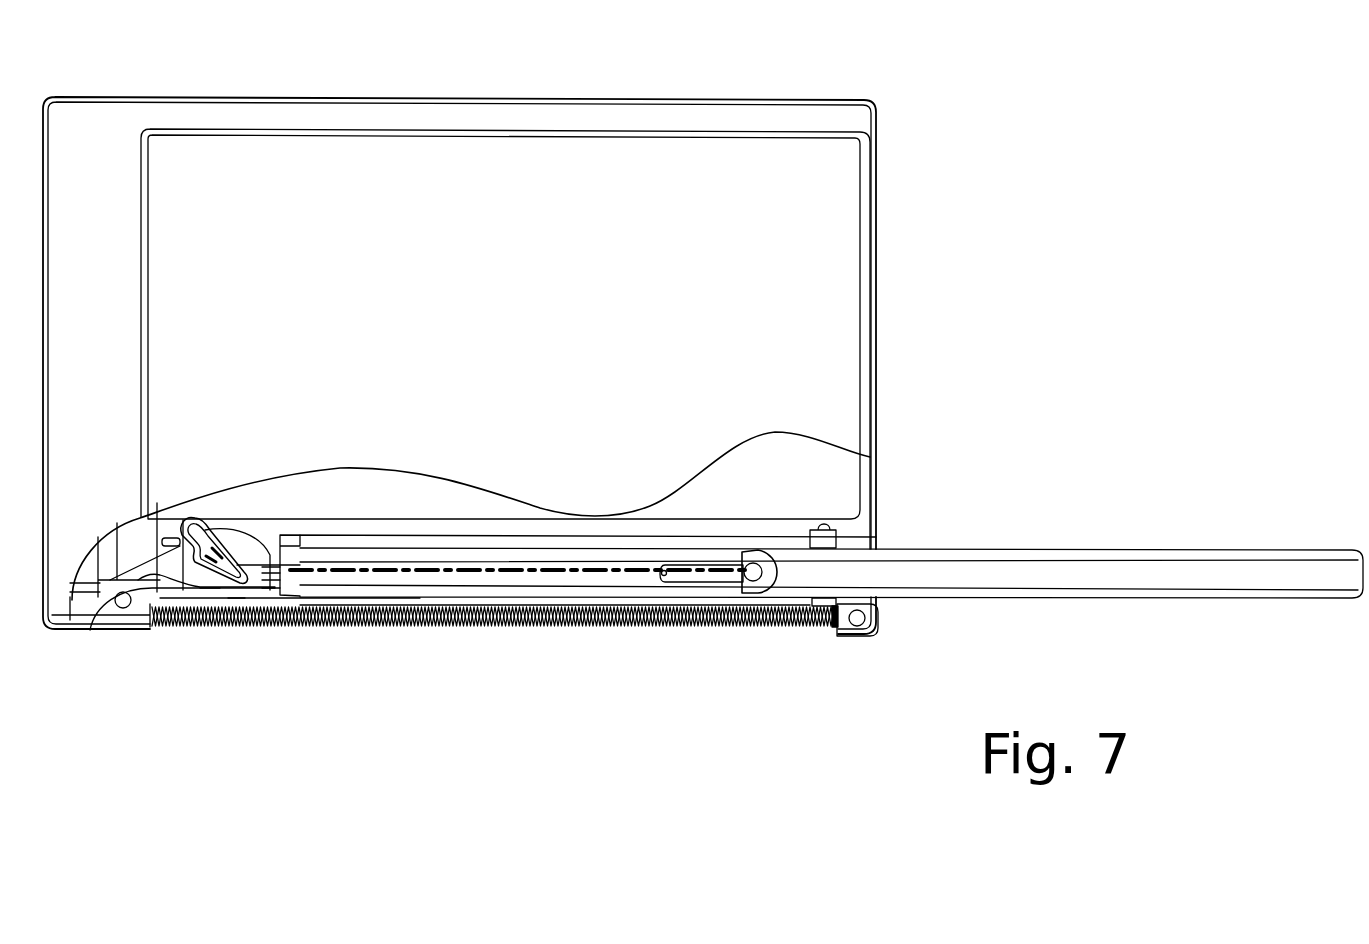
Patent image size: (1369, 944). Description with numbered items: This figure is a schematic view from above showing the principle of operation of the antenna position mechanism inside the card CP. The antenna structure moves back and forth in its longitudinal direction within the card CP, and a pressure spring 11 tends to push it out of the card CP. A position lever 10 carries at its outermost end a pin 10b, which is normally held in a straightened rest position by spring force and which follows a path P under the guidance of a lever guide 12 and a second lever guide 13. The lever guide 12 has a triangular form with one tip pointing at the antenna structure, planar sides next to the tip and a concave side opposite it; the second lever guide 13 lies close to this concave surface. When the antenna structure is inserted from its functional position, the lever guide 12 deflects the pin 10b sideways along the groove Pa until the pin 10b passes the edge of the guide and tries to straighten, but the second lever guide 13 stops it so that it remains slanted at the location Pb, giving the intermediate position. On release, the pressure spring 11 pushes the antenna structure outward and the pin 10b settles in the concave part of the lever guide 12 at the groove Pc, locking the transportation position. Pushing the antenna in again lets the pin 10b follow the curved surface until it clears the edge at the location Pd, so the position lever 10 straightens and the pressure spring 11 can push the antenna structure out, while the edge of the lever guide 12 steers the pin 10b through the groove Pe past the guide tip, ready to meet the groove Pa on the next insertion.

The card CP is at (727, 62).
The second lever guide 13 is at (140, 513).
The lever guide 12 is at (205, 520).
The path P is at (525, 572).
The groove Pa is at (280, 620).
The location Pb is at (89, 625).
The groove Pc is at (207, 610).
The location Pd is at (156, 598).
The groove Pe is at (236, 622).
The pressure spring 11 is at (628, 620).
The pin 10b is at (660, 580).
The position lever 10 is at (724, 582).